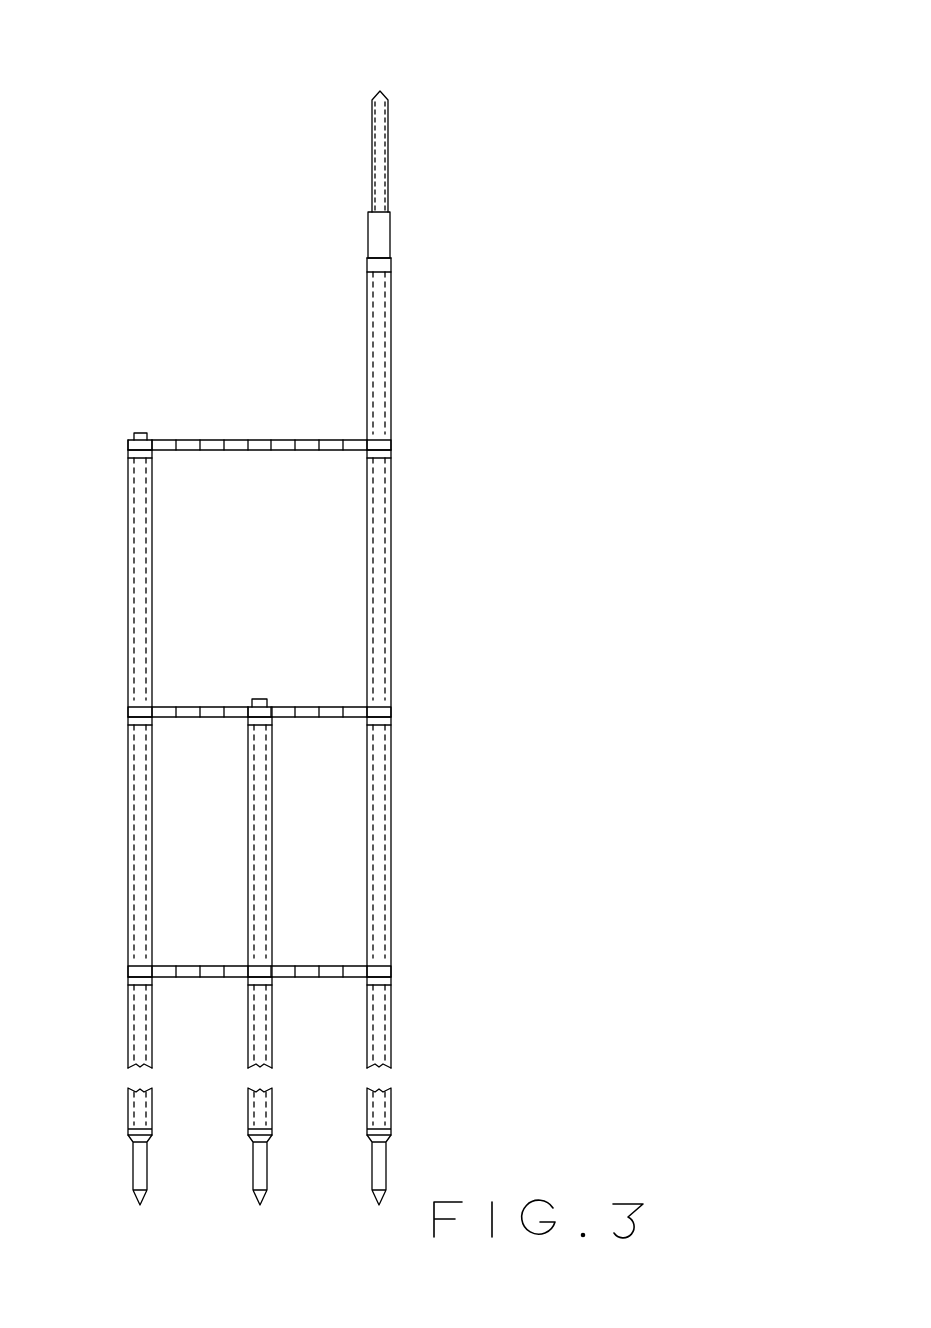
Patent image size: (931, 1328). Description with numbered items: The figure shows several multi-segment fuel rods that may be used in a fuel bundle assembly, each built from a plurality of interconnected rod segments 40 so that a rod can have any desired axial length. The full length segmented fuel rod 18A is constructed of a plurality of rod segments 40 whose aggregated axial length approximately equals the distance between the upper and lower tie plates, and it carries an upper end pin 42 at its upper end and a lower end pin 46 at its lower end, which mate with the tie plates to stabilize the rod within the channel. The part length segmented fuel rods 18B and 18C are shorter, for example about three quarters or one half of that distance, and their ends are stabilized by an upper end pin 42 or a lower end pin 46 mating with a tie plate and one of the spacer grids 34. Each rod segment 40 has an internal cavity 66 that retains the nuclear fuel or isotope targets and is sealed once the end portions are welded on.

The full length segmented fuel rod 18A is at (444, 141).
The part length segmented fuel rod 18B is at (141, 408).
The part length segmented fuel rod 18C is at (235, 1172).
The spacer grid 34 is at (252, 440).
The rod segment 40 is at (422, 274).
The upper end pin 42 is at (387, 155).
The lower end pin 46 is at (137, 1172).
The internal cavity 66 is at (382, 370).